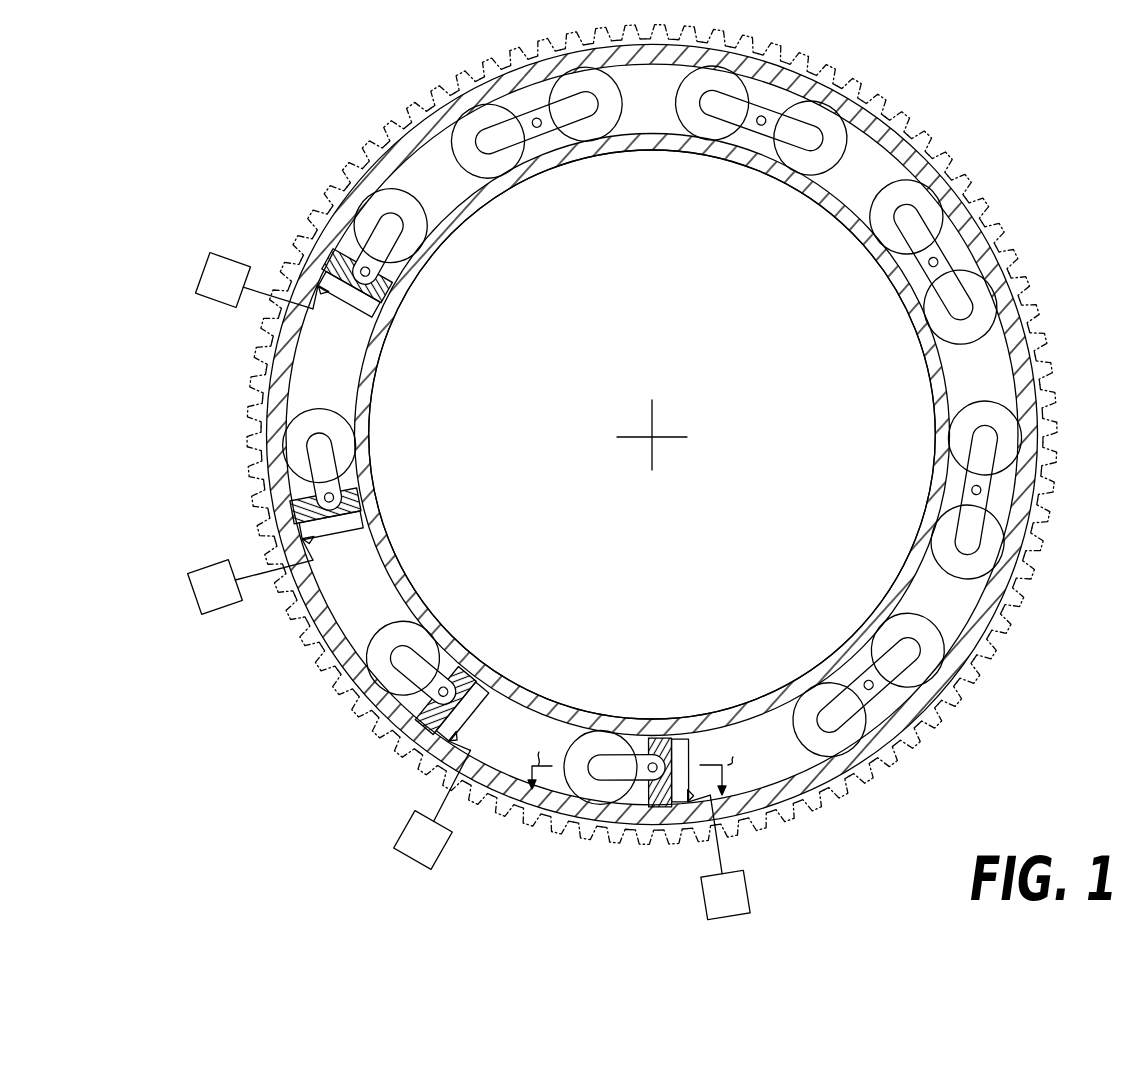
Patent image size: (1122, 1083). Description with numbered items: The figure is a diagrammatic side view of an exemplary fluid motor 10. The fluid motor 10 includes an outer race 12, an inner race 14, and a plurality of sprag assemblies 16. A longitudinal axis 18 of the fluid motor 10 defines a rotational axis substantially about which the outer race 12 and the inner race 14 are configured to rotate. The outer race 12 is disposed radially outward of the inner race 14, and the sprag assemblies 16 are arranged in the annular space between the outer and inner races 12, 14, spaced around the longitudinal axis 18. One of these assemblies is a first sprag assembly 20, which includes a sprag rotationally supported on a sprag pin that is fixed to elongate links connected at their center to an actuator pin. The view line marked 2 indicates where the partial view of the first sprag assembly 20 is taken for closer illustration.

The fluid motor 10 is at (1064, 198).
The outer race 12 is at (906, 150).
The inner race 14 is at (835, 210).
The sprag assemblies 16 is at (549, 189).
The longitudinal axis 18 is at (651, 435).
The first sprag assembly 20 is at (468, 112).
The view 2- 2 is at (635, 761).